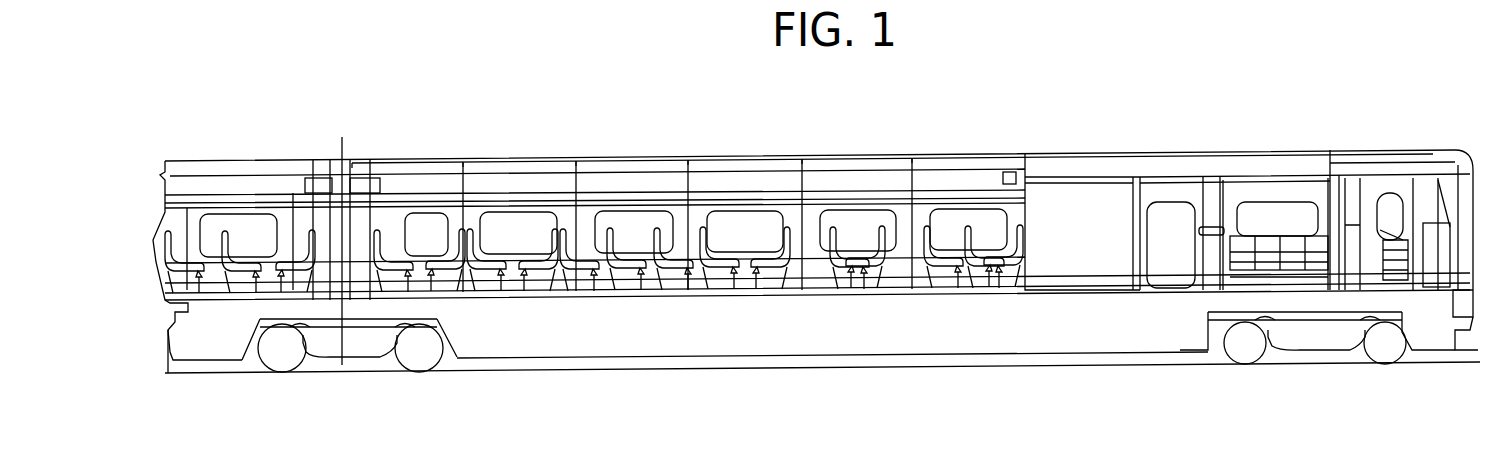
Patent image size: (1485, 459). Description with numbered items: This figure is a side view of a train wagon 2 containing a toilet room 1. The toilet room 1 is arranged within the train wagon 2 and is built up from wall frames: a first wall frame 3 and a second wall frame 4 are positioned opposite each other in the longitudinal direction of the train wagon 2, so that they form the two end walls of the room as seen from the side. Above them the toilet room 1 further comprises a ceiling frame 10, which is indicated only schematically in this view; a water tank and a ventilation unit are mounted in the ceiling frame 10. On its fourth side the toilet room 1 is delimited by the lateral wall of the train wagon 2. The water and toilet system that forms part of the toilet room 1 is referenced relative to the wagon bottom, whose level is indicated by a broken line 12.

The toilet room 1 is at (1059, 191).
The train wagon 2 is at (877, 143).
The first wall frame 3 is at (1145, 180).
The second wall frame 4 is at (1013, 183).
The ceiling frame 10 is at (1060, 180).
The broken line 12 is at (1169, 276).